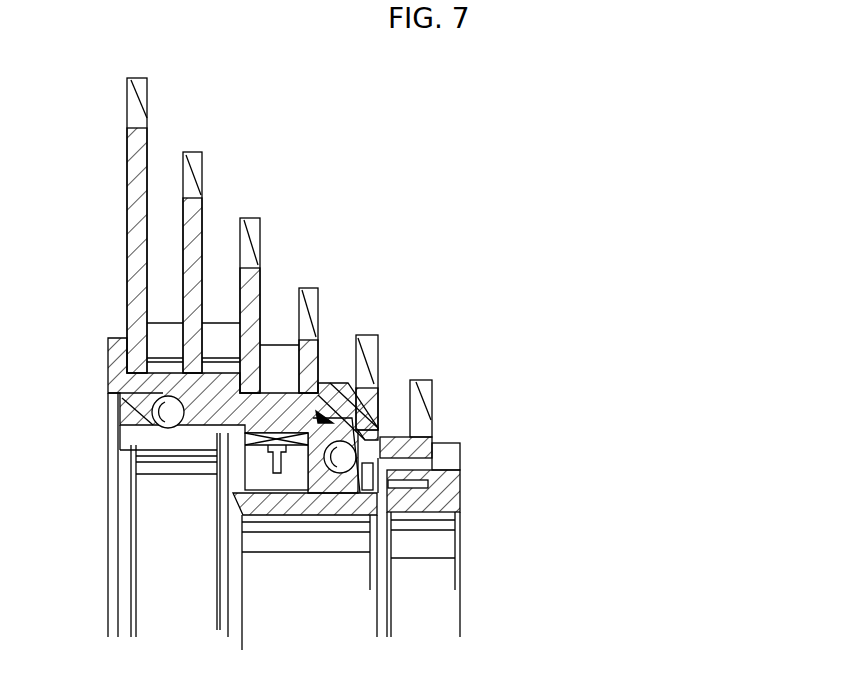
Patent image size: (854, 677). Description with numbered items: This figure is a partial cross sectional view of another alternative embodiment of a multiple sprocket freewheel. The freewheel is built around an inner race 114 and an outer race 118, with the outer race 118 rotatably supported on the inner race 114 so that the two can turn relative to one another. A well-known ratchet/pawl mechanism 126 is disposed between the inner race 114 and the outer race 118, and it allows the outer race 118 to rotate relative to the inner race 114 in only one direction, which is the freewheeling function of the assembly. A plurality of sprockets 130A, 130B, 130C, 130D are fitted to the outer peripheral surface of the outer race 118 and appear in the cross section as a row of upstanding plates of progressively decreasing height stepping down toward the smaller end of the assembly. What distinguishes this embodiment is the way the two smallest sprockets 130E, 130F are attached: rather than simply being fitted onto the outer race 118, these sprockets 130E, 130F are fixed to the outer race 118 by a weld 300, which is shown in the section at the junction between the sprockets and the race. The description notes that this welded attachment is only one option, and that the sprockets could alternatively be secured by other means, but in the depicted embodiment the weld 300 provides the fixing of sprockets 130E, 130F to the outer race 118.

The inner race 114 is at (110, 425).
The outer race 118 is at (223, 414).
The ratchet/pawl mechanism 126 is at (267, 502).
The sprocket 130A is at (147, 113).
The sprocket 130B is at (199, 158).
The sprocket 130C is at (251, 216).
The sprocket 130D is at (308, 286).
The sprocket 130E is at (360, 333).
The sprocket 130F is at (418, 378).
The weld 300 is at (342, 383).